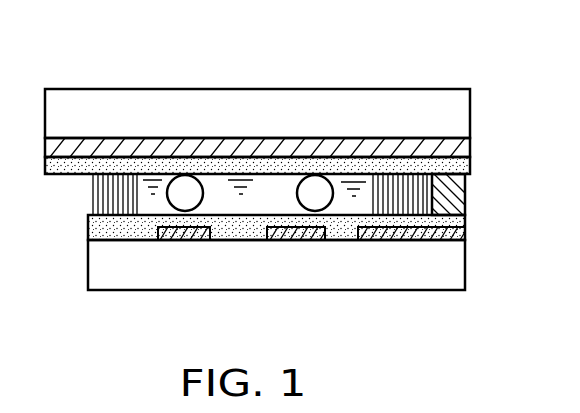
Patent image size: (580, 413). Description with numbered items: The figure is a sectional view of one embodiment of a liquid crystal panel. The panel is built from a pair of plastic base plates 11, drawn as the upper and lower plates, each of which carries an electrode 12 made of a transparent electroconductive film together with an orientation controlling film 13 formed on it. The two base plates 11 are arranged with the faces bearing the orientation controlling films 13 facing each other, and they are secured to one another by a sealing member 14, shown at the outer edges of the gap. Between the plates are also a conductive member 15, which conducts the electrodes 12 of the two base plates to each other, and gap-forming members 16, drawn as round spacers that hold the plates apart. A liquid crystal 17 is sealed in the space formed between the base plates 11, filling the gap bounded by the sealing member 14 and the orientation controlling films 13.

The plastic base plate 11 is at (316, 98).
The electrode 12 is at (463, 150).
The orientation controlling film 13 is at (467, 165).
The sealing member 14 is at (100, 196).
The conductive member 15 is at (465, 200).
The gap-forming member 16 is at (185, 185).
The liquid crystal 17 is at (253, 209).